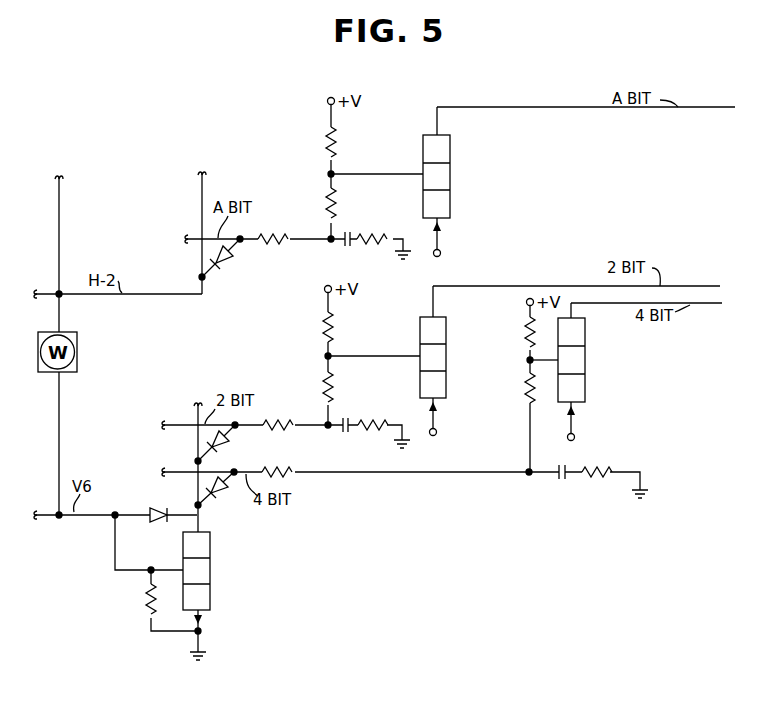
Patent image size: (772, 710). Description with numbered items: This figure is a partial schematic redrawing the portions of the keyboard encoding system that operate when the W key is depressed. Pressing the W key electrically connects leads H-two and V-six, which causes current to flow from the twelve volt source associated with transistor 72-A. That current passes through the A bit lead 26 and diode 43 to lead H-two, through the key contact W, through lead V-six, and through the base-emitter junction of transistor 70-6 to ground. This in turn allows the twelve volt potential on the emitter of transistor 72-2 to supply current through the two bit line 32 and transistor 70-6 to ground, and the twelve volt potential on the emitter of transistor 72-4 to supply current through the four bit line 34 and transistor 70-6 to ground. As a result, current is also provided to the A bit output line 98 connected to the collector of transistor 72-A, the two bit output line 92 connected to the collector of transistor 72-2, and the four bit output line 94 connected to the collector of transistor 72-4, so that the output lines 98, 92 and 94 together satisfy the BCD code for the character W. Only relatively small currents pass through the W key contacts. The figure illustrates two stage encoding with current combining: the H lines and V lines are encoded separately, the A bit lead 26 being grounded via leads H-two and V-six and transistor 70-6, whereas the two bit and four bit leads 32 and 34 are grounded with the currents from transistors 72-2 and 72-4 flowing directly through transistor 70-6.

The A bit lead 26 is at (307, 240).
The 2 bit line 32 is at (305, 424).
The 4 bit line 34 is at (492, 472).
The diode 43 is at (222, 266).
The transistor 70-6 is at (210, 570).
The transistor 72-A is at (450, 150).
The transistor 72-2 is at (470, 318).
The transistor 72-4 is at (585, 358).
The 2 bit output line 92 is at (565, 286).
The 4 bit output line 94 is at (628, 305).
The A bit output line 98 is at (533, 107).